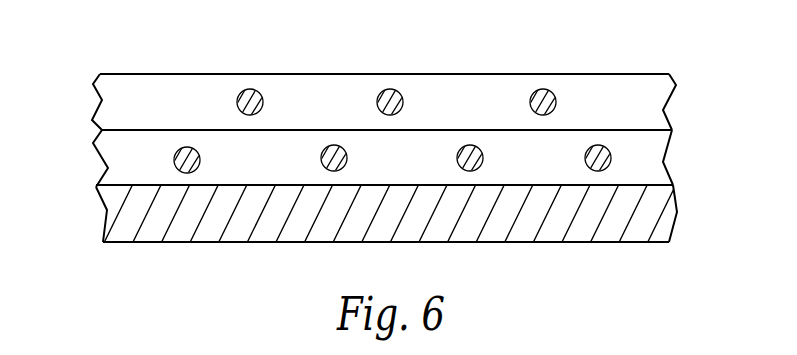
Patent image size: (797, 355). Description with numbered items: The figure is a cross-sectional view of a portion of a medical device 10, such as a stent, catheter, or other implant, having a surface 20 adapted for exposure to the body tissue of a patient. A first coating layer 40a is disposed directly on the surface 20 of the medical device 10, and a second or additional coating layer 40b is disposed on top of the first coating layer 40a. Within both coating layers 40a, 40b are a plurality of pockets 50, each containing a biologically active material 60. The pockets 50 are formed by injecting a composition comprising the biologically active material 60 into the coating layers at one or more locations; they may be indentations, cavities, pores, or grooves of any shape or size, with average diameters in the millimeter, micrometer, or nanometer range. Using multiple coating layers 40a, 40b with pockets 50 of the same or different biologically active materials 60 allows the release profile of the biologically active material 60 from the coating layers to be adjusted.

The medical device 10 is at (680, 216).
The surface 20 is at (658, 181).
The first coating layer 40a is at (140, 160).
The second coating layer 40b is at (650, 94).
The pocket 50 is at (241, 84).
The biologically active material 60 is at (325, 147).